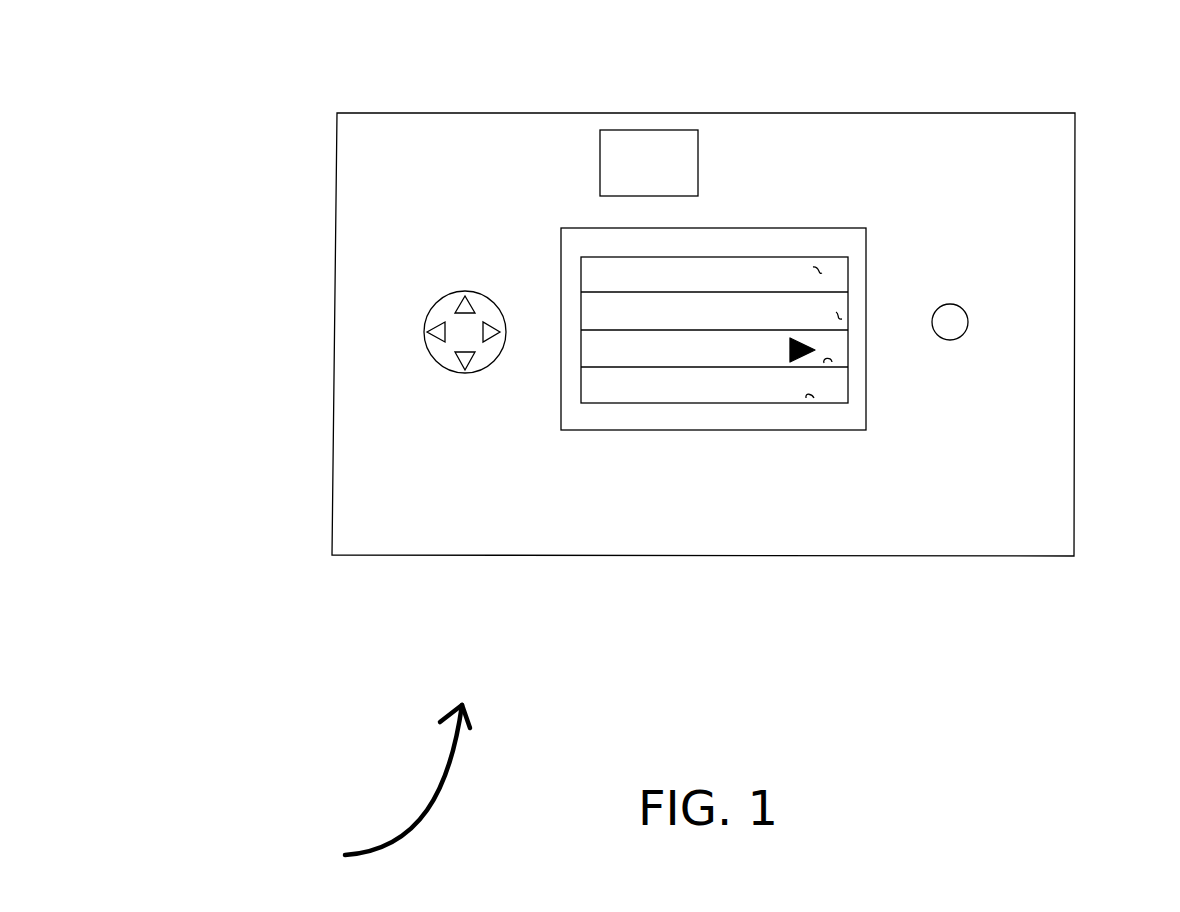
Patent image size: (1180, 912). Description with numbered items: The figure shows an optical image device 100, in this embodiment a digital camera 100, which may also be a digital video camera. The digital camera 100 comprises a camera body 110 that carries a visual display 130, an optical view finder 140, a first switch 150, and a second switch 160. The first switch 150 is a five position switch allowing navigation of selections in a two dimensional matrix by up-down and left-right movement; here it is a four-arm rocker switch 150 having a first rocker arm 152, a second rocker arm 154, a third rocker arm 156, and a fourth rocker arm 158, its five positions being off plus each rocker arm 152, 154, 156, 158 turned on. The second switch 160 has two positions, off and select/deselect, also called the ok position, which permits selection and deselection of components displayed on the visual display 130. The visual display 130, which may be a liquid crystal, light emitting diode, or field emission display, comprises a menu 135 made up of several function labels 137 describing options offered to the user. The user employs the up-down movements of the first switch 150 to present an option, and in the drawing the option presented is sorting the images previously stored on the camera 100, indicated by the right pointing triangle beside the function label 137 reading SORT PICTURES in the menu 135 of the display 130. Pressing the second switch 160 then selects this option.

The optical image device 100 is at (386, 785).
The camera body 110 is at (1030, 556).
The visual display 130 is at (676, 430).
The menu 135 is at (733, 403).
The function label 137 is at (822, 272).
The optical view finder 140 is at (650, 130).
The first switch 150 is at (435, 360).
The first rocker arm 152 is at (490, 343).
The second rocker arm 154 is at (437, 323).
The third rocker arm 156 is at (455, 290).
The fourth rocker arm 158 is at (463, 372).
The second switch 160 is at (965, 308).